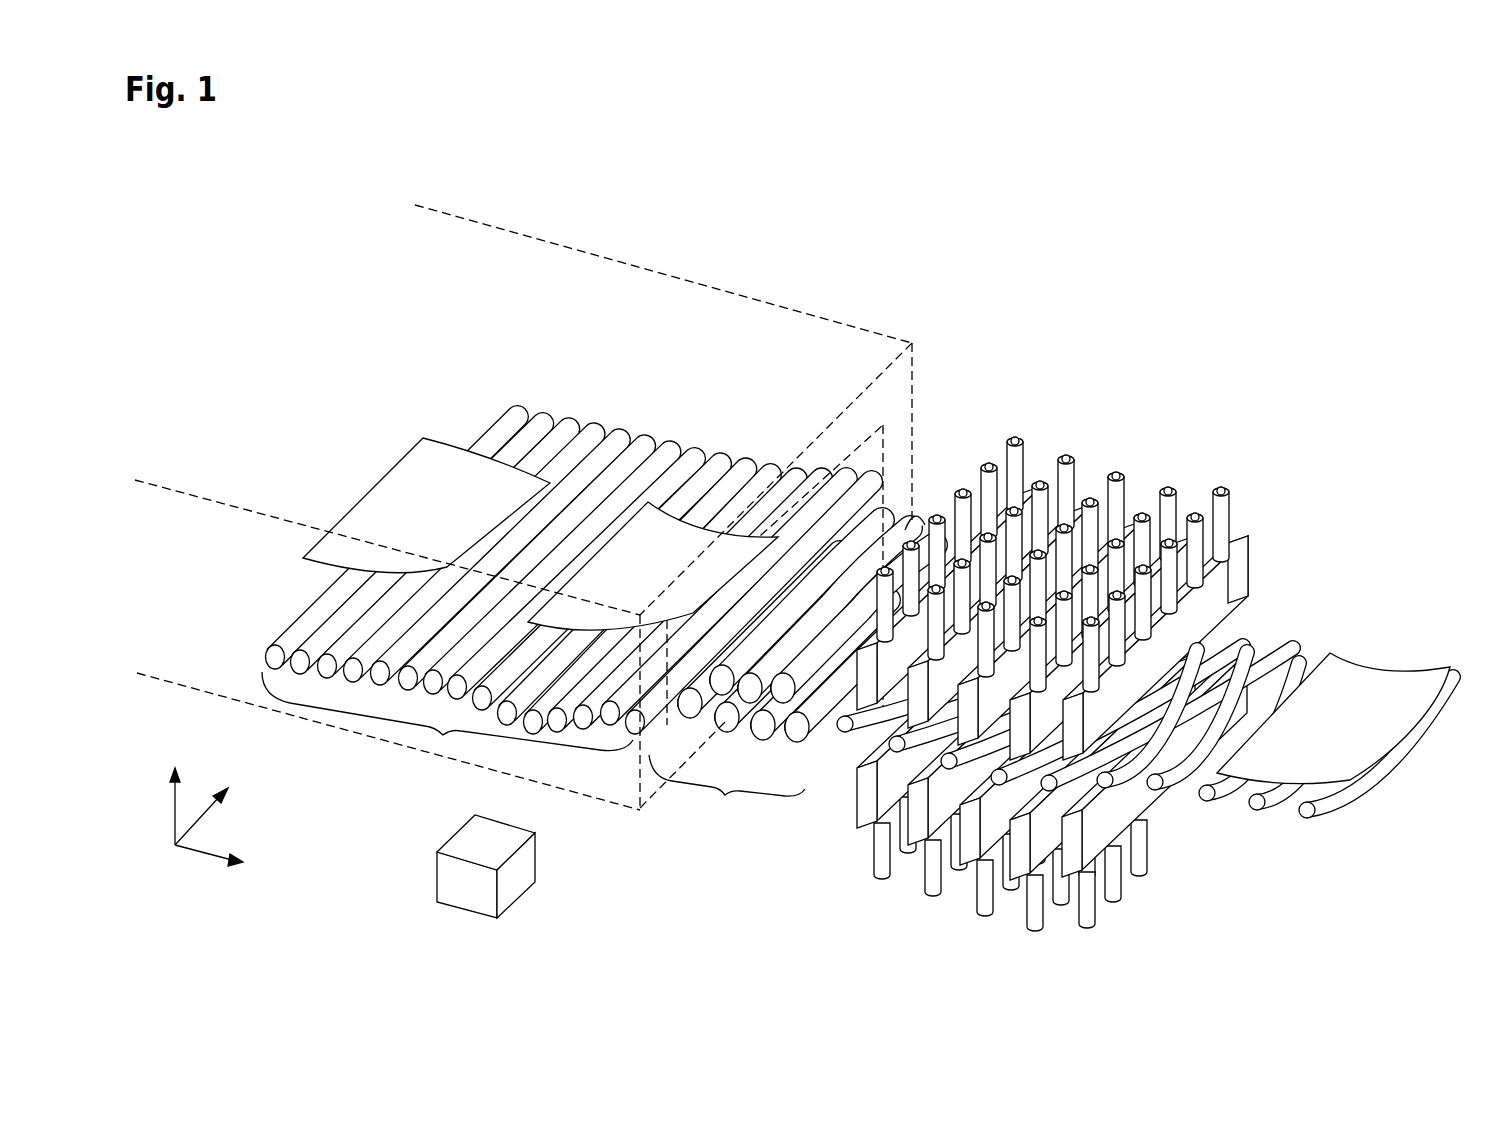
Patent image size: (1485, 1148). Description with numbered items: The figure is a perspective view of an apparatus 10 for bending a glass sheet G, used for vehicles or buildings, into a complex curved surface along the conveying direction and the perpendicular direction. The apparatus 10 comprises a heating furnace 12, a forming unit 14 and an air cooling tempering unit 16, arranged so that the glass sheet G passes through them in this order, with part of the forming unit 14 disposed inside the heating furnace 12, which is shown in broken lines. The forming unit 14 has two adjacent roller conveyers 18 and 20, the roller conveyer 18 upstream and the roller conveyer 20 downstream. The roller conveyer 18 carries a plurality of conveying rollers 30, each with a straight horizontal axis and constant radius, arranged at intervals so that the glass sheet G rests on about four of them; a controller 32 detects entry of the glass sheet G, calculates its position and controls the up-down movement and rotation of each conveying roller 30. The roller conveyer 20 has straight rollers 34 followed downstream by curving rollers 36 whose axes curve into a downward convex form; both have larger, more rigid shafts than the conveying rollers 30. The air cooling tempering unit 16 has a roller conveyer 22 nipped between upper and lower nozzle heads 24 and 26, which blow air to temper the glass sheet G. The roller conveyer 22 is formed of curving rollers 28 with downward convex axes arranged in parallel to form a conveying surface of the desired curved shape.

The apparatus for bending a glass sheet 10 is at (759, 259).
The heating furnace 12 is at (515, 215).
The forming unit 14 is at (801, 571).
The air cooling tempering unit 16 is at (1081, 684).
The roller conveyer 18 is at (572, 573).
The roller conveyer 20 is at (801, 615).
The roller conveyer 22 is at (1275, 746).
The nozzle head 24 is at (1250, 567).
The nozzle head 26 is at (1148, 868).
The curving roller 28 is at (1300, 645).
The conveying roller 30 is at (725, 447).
The controller 32 is at (490, 848).
The straight roller 34 is at (862, 530).
The curving roller 36 is at (918, 525).
The glass sheet G is at (392, 495).